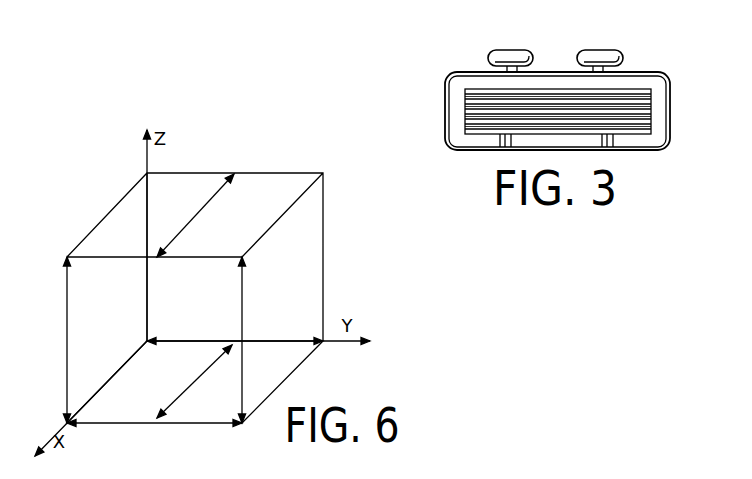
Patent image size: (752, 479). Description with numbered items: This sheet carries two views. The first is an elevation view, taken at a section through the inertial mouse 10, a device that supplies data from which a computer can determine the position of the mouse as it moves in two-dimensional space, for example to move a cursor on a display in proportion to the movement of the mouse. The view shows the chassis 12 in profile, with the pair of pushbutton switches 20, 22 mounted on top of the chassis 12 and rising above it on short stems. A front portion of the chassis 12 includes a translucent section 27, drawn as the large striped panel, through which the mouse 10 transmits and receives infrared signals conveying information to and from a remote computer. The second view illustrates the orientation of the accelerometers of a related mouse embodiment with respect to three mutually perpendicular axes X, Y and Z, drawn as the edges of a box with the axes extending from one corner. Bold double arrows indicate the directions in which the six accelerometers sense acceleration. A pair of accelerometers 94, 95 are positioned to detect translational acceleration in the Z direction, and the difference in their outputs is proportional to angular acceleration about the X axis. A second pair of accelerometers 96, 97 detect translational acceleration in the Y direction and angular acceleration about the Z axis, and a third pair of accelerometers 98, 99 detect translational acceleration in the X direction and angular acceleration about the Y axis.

In FIG. 3, the inertial mouse 10 is at (657, 57).
In FIG. 3, the chassis 12 is at (670, 110).
In FIG. 3, the pushbutton switch 20 is at (523, 49).
In FIG. 3, the pushbutton switch 22 is at (615, 49).
In FIG. 3, the translucent section 27 is at (463, 123).
In FIG. 6, the accelerometer 94 is at (63, 343).
In FIG. 6, the accelerometer 95 is at (243, 380).
In FIG. 6, the accelerometer 96 is at (132, 425).
In FIG. 6, the accelerometer 97 is at (302, 334).
In FIG. 6, the accelerometer 98 is at (185, 225).
In FIG. 6, the accelerometer 99 is at (208, 367).